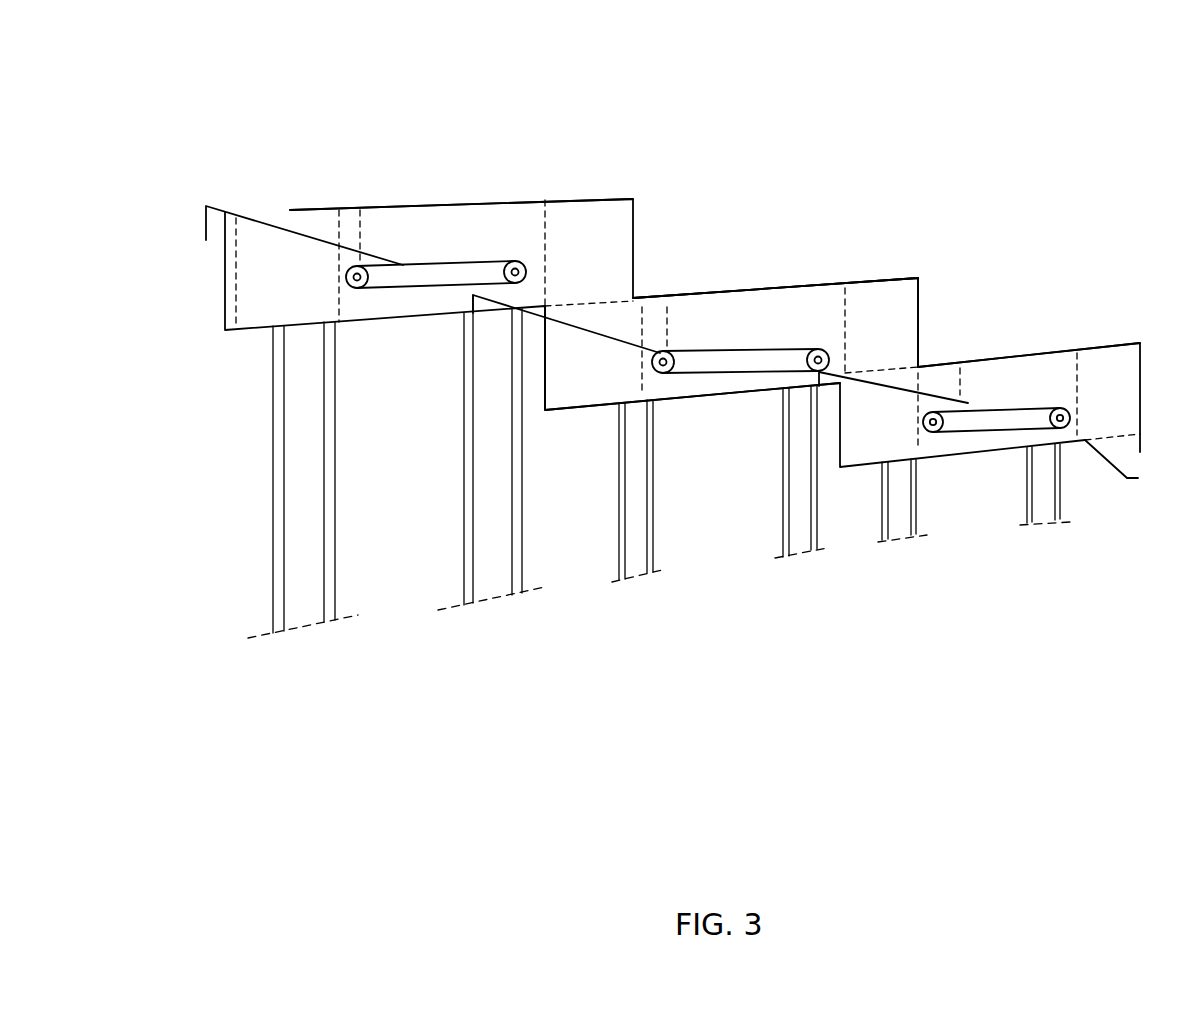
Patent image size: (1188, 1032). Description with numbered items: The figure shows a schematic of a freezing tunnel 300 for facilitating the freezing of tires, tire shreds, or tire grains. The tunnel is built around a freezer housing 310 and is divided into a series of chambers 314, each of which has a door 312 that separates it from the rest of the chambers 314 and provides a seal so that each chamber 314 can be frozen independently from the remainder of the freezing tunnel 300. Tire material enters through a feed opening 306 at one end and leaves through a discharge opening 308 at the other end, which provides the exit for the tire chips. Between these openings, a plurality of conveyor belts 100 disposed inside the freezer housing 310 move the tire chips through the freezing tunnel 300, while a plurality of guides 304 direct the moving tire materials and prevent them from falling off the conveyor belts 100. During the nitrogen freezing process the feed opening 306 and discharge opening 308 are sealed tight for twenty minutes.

The conveyor belts 100 is at (390, 290).
The freezing tunnel 300 is at (720, 680).
The guides 304 is at (567, 323).
The feed opening 306 is at (223, 188).
The discharge opening 308 is at (1152, 473).
The freezer housing 310 is at (710, 290).
The door 312 is at (592, 247).
The chambers 314 is at (412, 185).